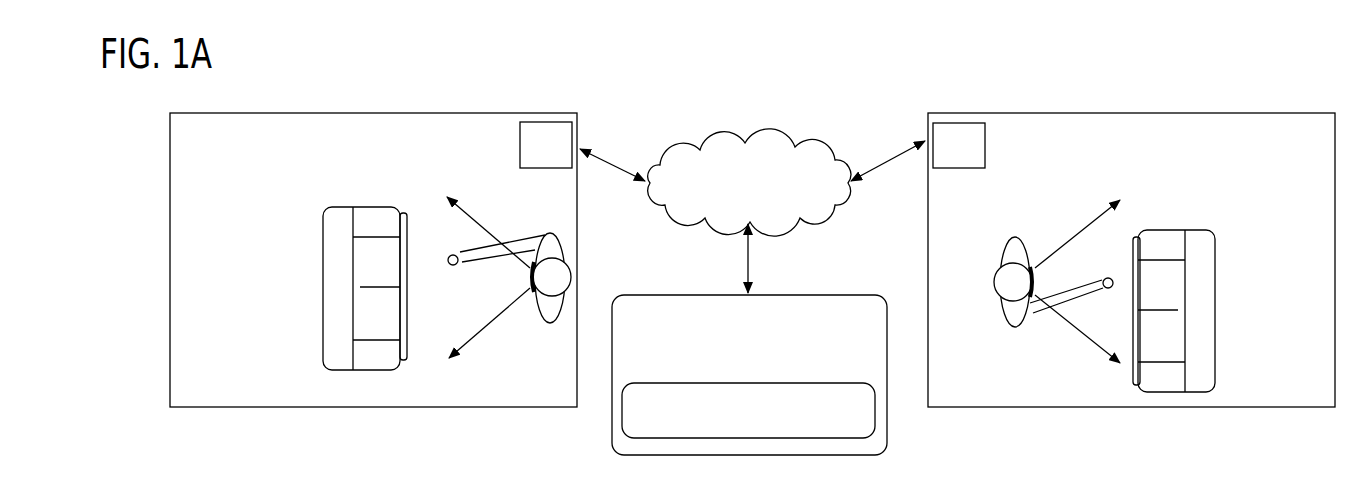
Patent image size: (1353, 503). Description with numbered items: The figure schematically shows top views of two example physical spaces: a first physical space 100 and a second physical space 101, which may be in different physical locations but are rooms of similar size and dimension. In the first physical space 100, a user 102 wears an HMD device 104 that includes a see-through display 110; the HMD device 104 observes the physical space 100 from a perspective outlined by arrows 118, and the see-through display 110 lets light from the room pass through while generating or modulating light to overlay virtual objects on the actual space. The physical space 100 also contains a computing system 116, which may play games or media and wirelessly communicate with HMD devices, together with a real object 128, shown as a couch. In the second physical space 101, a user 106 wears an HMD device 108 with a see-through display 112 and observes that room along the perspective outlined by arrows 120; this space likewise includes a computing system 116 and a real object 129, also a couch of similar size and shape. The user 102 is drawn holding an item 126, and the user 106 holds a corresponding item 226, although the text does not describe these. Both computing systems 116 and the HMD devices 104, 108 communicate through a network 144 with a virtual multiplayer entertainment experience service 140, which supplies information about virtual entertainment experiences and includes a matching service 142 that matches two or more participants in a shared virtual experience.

The first physical space 100 is at (340, 98).
The second physical space 101 is at (1182, 99).
The user 102 is at (543, 216).
The HMD device 104 is at (529, 302).
The user 106 is at (1000, 222).
The HMD device 108 is at (1038, 256).
The see-through display 110 is at (529, 272).
The see-through display 112 is at (1040, 286).
The computing system 116 is at (559, 155).
The arrows 118 is at (462, 212).
The arrows 120 is at (1112, 200).
The first hand-held controller 126 is at (452, 266).
The real object 128 is at (370, 207).
The real object 129 is at (1175, 230).
The virtual multiplayer entertainment experience service 140 is at (832, 295).
The matching service 142 is at (876, 410).
The network 144 is at (756, 143).
The second hand-held controller 226 is at (1107, 278).